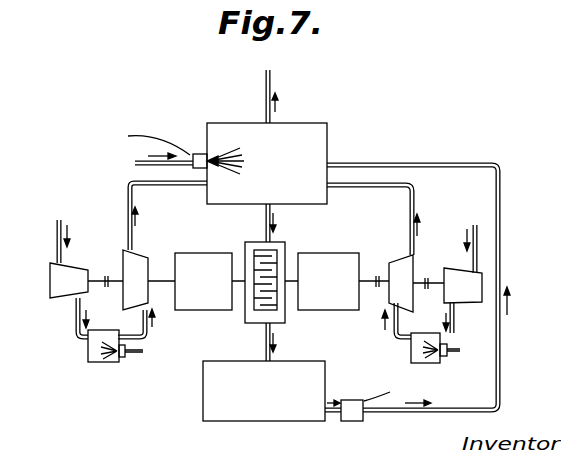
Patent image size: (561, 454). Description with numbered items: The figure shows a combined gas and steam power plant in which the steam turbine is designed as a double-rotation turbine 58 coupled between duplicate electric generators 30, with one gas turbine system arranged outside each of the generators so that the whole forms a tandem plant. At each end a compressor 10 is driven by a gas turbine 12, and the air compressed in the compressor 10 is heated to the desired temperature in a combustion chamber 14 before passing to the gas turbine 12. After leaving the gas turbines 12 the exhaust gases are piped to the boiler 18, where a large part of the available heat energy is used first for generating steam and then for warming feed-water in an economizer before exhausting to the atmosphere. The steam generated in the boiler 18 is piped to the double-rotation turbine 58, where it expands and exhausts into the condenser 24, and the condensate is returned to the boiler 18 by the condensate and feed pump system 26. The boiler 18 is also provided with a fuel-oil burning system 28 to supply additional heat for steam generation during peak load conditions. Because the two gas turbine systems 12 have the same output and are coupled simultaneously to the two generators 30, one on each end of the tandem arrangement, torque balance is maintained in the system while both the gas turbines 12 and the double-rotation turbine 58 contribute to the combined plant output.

The compressor 10 is at (73, 278).
The gas turbine 12 is at (138, 260).
The combustion chamber 14 is at (96, 356).
The boiler 18 is at (240, 125).
The condenser 24 is at (268, 418).
The condensate and feed pump system 26 is at (353, 421).
The fuel-oil burning system 28 is at (196, 153).
The electric generator 30 is at (200, 260).
The double-rotation turbine 58 is at (255, 243).